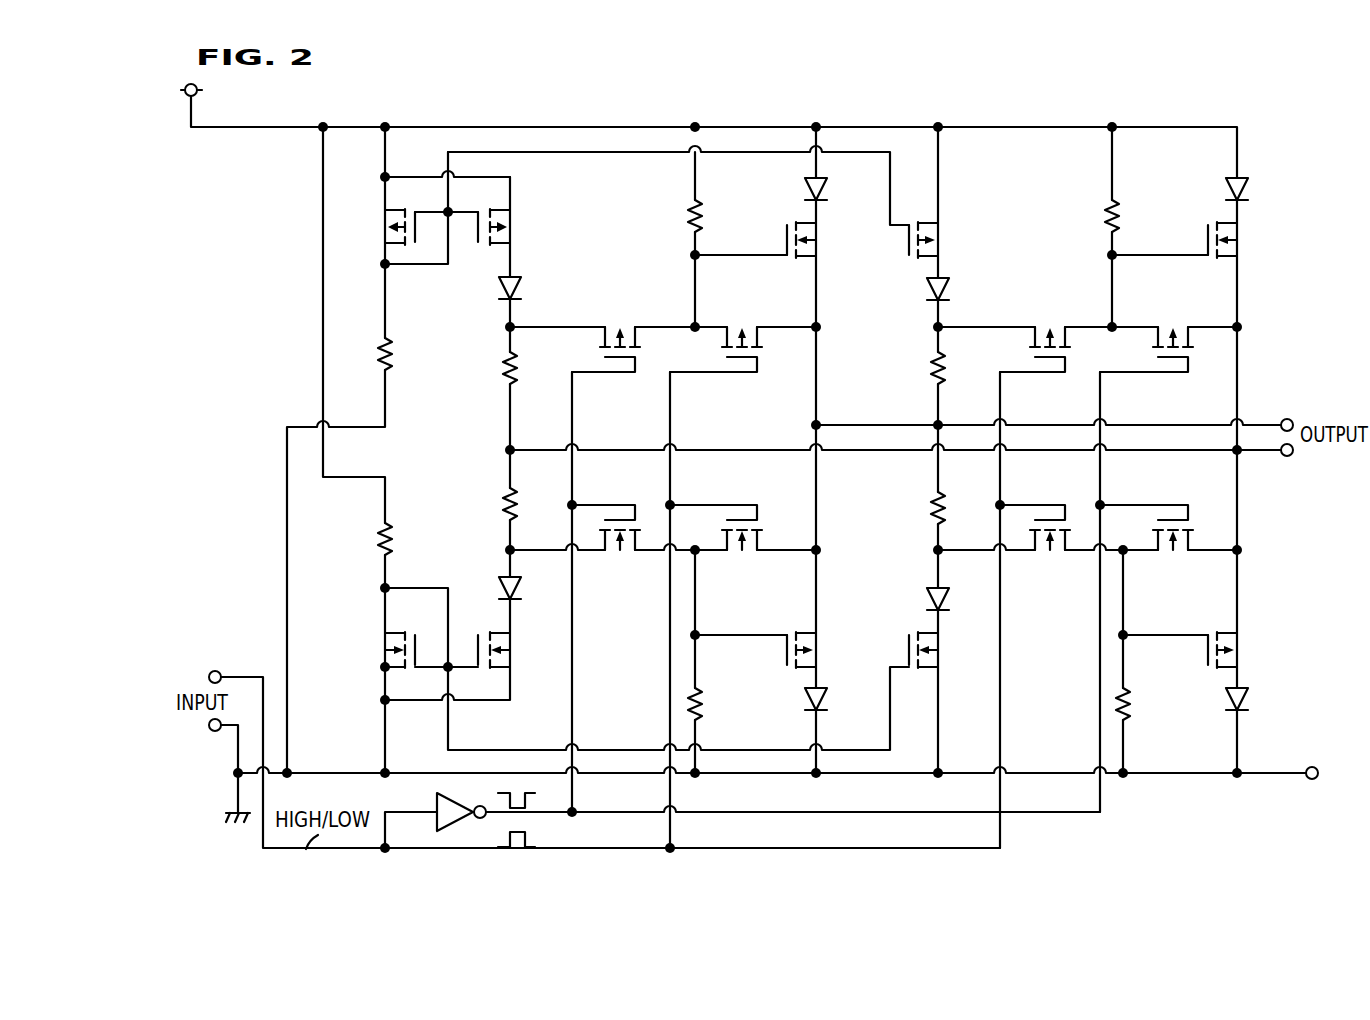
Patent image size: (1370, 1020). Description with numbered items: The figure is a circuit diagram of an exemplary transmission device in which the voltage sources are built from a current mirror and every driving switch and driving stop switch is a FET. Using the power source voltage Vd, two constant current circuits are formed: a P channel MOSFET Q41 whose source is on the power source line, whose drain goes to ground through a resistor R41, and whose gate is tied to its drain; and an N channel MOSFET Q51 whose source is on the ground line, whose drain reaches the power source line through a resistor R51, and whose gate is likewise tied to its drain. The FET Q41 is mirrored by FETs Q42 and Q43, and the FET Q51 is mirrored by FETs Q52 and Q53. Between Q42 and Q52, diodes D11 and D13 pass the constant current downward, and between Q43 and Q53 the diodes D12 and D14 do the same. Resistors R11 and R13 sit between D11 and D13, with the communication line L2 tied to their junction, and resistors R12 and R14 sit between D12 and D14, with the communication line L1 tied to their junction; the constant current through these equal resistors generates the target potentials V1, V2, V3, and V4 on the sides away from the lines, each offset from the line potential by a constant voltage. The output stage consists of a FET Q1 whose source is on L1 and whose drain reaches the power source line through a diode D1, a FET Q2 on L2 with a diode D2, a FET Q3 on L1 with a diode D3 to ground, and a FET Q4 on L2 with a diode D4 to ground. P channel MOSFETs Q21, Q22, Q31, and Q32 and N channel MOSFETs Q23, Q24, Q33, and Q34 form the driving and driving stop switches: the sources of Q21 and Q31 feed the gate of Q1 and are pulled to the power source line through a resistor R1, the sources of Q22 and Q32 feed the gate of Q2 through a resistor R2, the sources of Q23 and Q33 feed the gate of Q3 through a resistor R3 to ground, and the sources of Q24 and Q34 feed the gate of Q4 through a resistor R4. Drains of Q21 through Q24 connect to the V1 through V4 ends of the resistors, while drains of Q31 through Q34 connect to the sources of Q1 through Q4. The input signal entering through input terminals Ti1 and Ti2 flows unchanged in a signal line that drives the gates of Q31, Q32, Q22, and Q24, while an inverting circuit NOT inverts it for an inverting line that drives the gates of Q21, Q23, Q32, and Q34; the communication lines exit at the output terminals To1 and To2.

The power source voltage Vd is at (209, 90).
The output terminal To1 is at (1284, 410).
The output terminal To2 is at (1284, 467).
The input terminal Ti1 is at (208, 662).
The input terminal Ti2 is at (208, 740).
The inverting circuit NOT is at (461, 800).
The communication line L1 is at (1146, 424).
The communication line L2 is at (1146, 452).
The field effect transistor Q1 is at (820, 245).
The field effect transistor Q2 is at (1242, 248).
The field effect transistor Q3 is at (820, 655).
The field effect transistor Q4 is at (1242, 655).
The P channel MOSFET Q21 is at (621, 323).
The P channel MOSFET Q22 is at (1051, 323).
The N channel MOSFET Q23 is at (622, 554).
The N channel MOSFET Q24 is at (1052, 554).
The P channel MOSFET Q31 is at (743, 323).
The P channel MOSFET Q32 is at (1174, 323).
The N channel MOSFET Q33 is at (744, 554).
The N channel MOSFET Q34 is at (1174, 554).
The P channel MOSFET Q41 is at (383, 225).
The FET Q42 is at (512, 222).
The FET Q43 is at (940, 232).
The N channel MOSFET Q51 is at (383, 650).
The FET Q52 is at (513, 652).
The FET Q53 is at (940, 652).
The diode D1 is at (828, 190).
The diode D2 is at (1249, 190).
The diode D3 is at (828, 700).
The diode D4 is at (1249, 700).
The diode D11 is at (499, 289).
The diode D12 is at (927, 289).
The diode D13 is at (499, 589).
The diode D14 is at (927, 599).
The resistor R1 is at (688, 218).
The resistor R2 is at (1106, 218).
The resistor R3 is at (702, 712).
The resistor R4 is at (1130, 712).
The resistor R11 is at (503, 365).
The resistor R12 is at (931, 365).
The resistor R13 is at (503, 497).
The resistor R14 is at (931, 497).
The resistor R41 is at (378, 352).
The resistor R51 is at (378, 537).
The target potential V1 is at (500, 327).
The target potential V2 is at (928, 327).
The target potential V3 is at (500, 550).
The target potential V4 is at (928, 550).